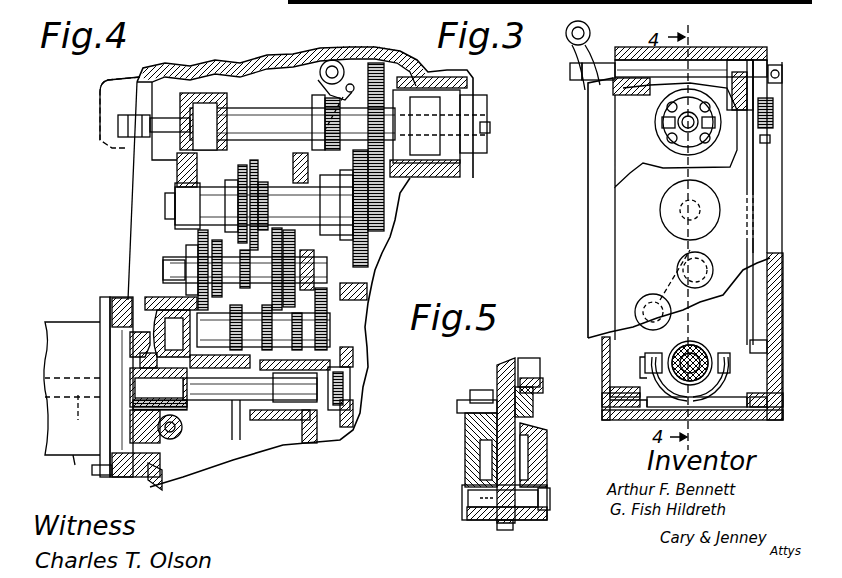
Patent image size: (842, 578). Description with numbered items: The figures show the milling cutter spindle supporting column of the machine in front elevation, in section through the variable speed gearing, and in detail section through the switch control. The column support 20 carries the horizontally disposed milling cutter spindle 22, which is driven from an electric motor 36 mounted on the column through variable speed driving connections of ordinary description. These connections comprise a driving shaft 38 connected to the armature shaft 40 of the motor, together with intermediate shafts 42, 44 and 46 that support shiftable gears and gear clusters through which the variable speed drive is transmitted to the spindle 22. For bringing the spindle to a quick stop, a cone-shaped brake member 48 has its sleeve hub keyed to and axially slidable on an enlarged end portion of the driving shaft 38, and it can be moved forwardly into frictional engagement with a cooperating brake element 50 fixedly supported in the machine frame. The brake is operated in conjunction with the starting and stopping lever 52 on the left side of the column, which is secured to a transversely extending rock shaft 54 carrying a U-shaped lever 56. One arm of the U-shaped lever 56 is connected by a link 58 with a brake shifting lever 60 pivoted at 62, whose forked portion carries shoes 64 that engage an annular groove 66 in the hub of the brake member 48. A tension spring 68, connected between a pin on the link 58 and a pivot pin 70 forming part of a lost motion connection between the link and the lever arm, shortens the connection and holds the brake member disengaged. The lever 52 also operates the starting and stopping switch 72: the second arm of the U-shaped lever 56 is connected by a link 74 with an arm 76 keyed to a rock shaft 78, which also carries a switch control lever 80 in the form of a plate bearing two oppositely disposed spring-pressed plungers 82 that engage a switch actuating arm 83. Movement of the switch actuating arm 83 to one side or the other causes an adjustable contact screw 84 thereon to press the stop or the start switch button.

In FIG. 4, the column support 20 is at (235, 65).
In FIG. 3, the column support 20 is at (598, 207).
In FIG. 5, the column support 20 is at (510, 525).
In FIG. 4, the milling cutter spindle 22 is at (435, 177).
In FIG. 3, the milling cutter spindle 22 is at (683, 148).
In FIG. 4, the electric motor 36 is at (73, 455).
In FIG. 4, the driving shaft 38 is at (262, 400).
In FIG. 3, the driving shaft 38 is at (653, 412).
In FIG. 4, the armature shaft 40 is at (72, 388).
In FIG. 3, the armature shaft 40 is at (647, 368).
In FIG. 4, the intermediate shaft 42 is at (320, 300).
In FIG. 3, the intermediate shaft 42 is at (657, 295).
In FIG. 4, the intermediate shaft 44 is at (165, 270).
In FIG. 3, the intermediate shaft 44 is at (680, 262).
In FIG. 4, the intermediate shaft 46 is at (175, 205).
In FIG. 3, the intermediate shaft 46 is at (680, 212).
In FIG. 4, the cone-shaped brake member 48 is at (130, 366).
In FIG. 4, the brake element 50 is at (130, 340).
In FIG. 3, the starting and stopping lever 52 is at (570, 42).
In FIG. 4, the rock shaft 54 is at (320, 62).
In FIG. 3, the rock shaft 54 is at (612, 82).
In FIG. 4, the U-shaped lever 56 is at (370, 63).
In FIG. 3, the U-shaped lever 56 is at (745, 62).
In FIG. 4, the link 58 is at (312, 158).
In FIG. 3, the link 58 is at (758, 285).
In FIG. 4, the brake shifting lever 60 is at (172, 440).
In FIG. 3, the brake shifting lever 60 is at (725, 400).
In FIG. 4, the pivot 62 is at (183, 433).
In FIG. 3, the pivot 62 is at (752, 412).
In FIG. 3, the shoes 64 is at (658, 350).
In FIG. 4, the annular groove 66 is at (183, 420).
In FIG. 3, the annular groove 66 is at (693, 340).
In FIG. 3, the tension spring 68 is at (773, 110).
In FIG. 3, the pivot pin 70 is at (782, 72).
In FIG. 5, the starting and stopping switch 72 is at (540, 368).
In FIG. 3, the link 74 is at (768, 137).
In FIG. 5, the link 74 is at (480, 390).
In FIG. 5, the arm 76 is at (472, 462).
In FIG. 5, the rock shaft 78 is at (480, 520).
In FIG. 5, the switch control lever 80 is at (543, 463).
In FIG. 5, the spring-pressed plungers 82 is at (510, 430).
In FIG. 5, the switch actuating arm 83 is at (543, 413).
In FIG. 5, the adjustable contact screw 84 is at (513, 380).